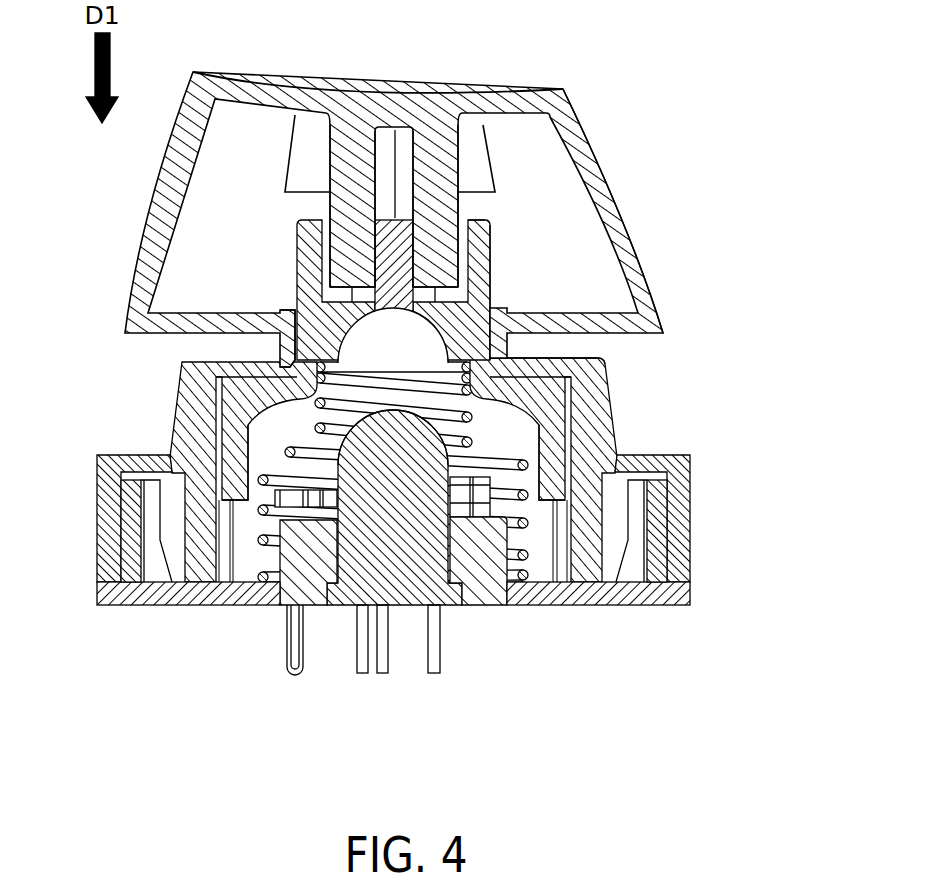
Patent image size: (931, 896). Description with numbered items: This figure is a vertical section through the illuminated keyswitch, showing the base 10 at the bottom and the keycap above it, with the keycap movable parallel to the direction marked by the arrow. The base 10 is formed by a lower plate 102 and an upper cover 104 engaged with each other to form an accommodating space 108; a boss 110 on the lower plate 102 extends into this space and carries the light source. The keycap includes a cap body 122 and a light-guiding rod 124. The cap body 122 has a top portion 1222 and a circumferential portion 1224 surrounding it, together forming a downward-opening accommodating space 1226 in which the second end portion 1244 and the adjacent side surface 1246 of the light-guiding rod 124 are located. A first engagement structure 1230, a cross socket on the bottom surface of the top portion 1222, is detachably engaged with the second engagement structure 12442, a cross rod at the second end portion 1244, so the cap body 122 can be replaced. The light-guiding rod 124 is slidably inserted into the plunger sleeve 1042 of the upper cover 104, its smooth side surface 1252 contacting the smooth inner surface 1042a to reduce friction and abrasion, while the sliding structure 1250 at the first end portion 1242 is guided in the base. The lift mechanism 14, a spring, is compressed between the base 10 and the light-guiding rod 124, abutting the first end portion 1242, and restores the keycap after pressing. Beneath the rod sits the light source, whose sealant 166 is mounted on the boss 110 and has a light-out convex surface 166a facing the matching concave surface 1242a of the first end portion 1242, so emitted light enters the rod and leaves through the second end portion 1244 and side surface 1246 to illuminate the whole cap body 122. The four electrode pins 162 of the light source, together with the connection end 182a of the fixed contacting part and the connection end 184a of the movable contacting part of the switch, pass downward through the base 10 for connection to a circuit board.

The base 10 is at (738, 423).
The lift mechanism 14 is at (527, 553).
The lower plate 102 is at (628, 598).
The upper cover 104 is at (600, 390).
The accommodating space 108 is at (545, 522).
The boss 110 is at (487, 590).
The cap body 122 is at (571, 54).
The light-guiding rod 124 is at (250, 261).
The electrode pins 162 is at (366, 672).
The sealant 166 is at (405, 578).
The light-out convex surface 166a is at (457, 434).
The connection end of the fixed contacting part 182a is at (433, 670).
The connection end of the movable contacting part 184a is at (292, 657).
The plunger sleeve 1042 is at (498, 322).
The inner surface of the plunger sleeve 1042a is at (445, 308).
The top portion 1222 is at (457, 100).
The circumferential portion 1224 is at (593, 170).
The accommodating space 1226 is at (542, 150).
The first engagement structure 1230 is at (382, 135).
The first end portion 1242 is at (297, 358).
The concave surface 1242a is at (280, 320).
The second end portion 1244 is at (281, 219).
The side surface 1246 is at (500, 220).
The sliding structure 1250 is at (557, 418).
The smooth side surface 1252 is at (583, 349).
The second engagement structure 12442 is at (397, 247).